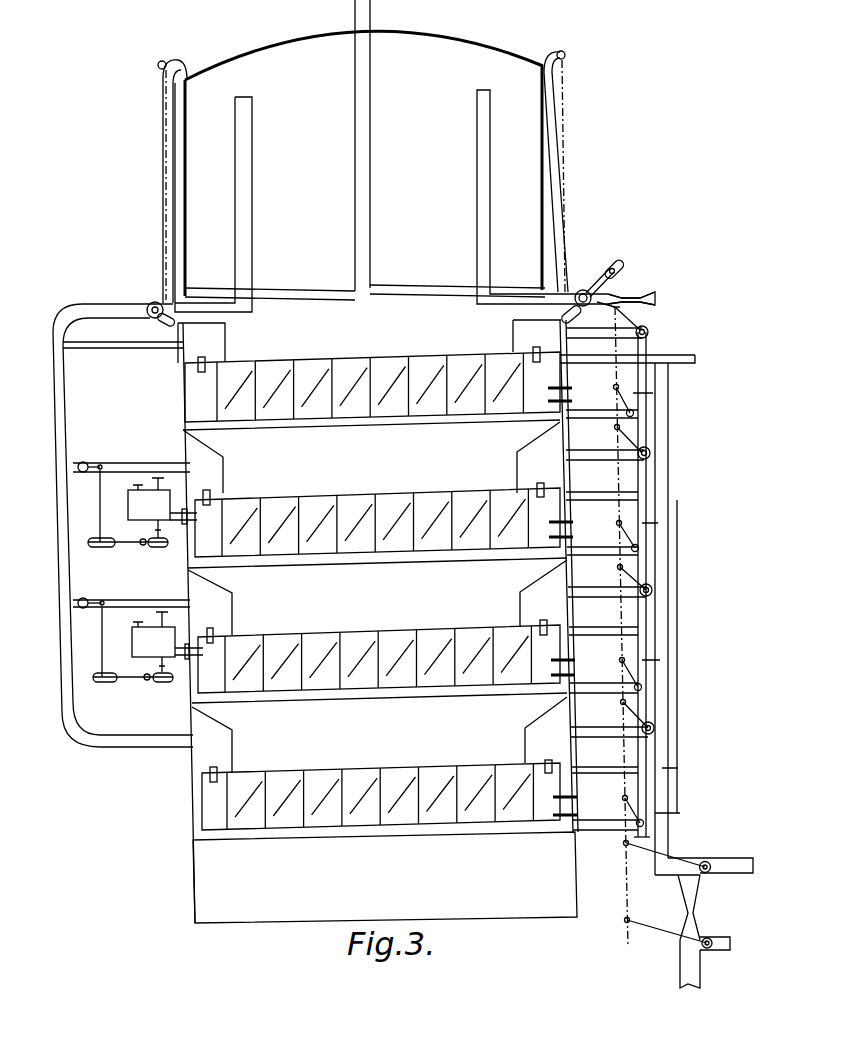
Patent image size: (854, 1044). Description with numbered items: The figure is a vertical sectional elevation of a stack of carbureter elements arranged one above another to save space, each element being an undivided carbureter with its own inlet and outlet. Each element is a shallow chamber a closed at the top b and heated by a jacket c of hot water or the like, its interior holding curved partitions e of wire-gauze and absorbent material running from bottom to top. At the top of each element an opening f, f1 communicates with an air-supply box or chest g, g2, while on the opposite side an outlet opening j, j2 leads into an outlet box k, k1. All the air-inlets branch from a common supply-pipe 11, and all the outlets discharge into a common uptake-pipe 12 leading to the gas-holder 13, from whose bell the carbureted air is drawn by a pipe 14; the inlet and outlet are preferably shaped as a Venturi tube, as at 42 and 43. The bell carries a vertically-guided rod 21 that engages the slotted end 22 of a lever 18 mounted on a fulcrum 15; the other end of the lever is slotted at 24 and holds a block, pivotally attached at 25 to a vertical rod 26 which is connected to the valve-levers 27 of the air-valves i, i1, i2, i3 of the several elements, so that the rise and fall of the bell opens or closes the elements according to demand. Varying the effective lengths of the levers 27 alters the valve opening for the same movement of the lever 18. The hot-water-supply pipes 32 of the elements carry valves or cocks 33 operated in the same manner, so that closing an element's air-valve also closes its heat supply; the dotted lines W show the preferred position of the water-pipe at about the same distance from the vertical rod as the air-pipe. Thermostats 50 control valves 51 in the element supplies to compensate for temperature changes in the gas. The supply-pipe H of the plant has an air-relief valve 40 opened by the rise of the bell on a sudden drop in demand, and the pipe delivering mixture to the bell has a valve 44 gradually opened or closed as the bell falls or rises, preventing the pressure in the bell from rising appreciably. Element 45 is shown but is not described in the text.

The common uptake-pipe 12 is at (61, 498).
The gas-holder 13 is at (365, 150).
The pipe 14 is at (487, 207).
The fulcrum 15 is at (583, 290).
The lever 18 is at (598, 283).
The vertically-guided rod 21 is at (566, 130).
The slotted end 22 is at (560, 318).
The slot 24 is at (622, 262).
The pivot 25 is at (618, 276).
The vertical rod 26 is at (613, 381).
The valve-levers 27 is at (630, 320).
The hot-water-supply pipes 32 is at (678, 780).
The valves or cocks 33 is at (634, 413).
The air-relief valve 40 is at (711, 941).
The Venturi tube inlet 42 is at (693, 909).
The Venturi tube outlet 43 is at (628, 293).
The valve 44 is at (153, 302).
The arm 45 is at (735, 863).
The thermostat 50 is at (140, 530).
The valves 51 is at (88, 462).
The common supply-pipe 11 is at (656, 556).
The dotted-line position of water-pipe W is at (652, 512).
The supply-pipe H is at (700, 975).
The shallow circular chamber a is at (338, 421).
The top b is at (355, 499).
The jacket c is at (385, 561).
The curved partitions e is at (369, 401).
The opening f is at (545, 765).
The opening f1 is at (541, 620).
The box or chest g is at (527, 728).
The box or chest g2 is at (528, 455).
The opening j is at (219, 771).
The opening j2 is at (212, 497).
The box k is at (228, 733).
The box k1 is at (228, 611).
The air-valve i is at (655, 731).
The air-valve i1 is at (653, 593).
The air-valve i2 is at (651, 456).
The air-valve i3 is at (649, 334).